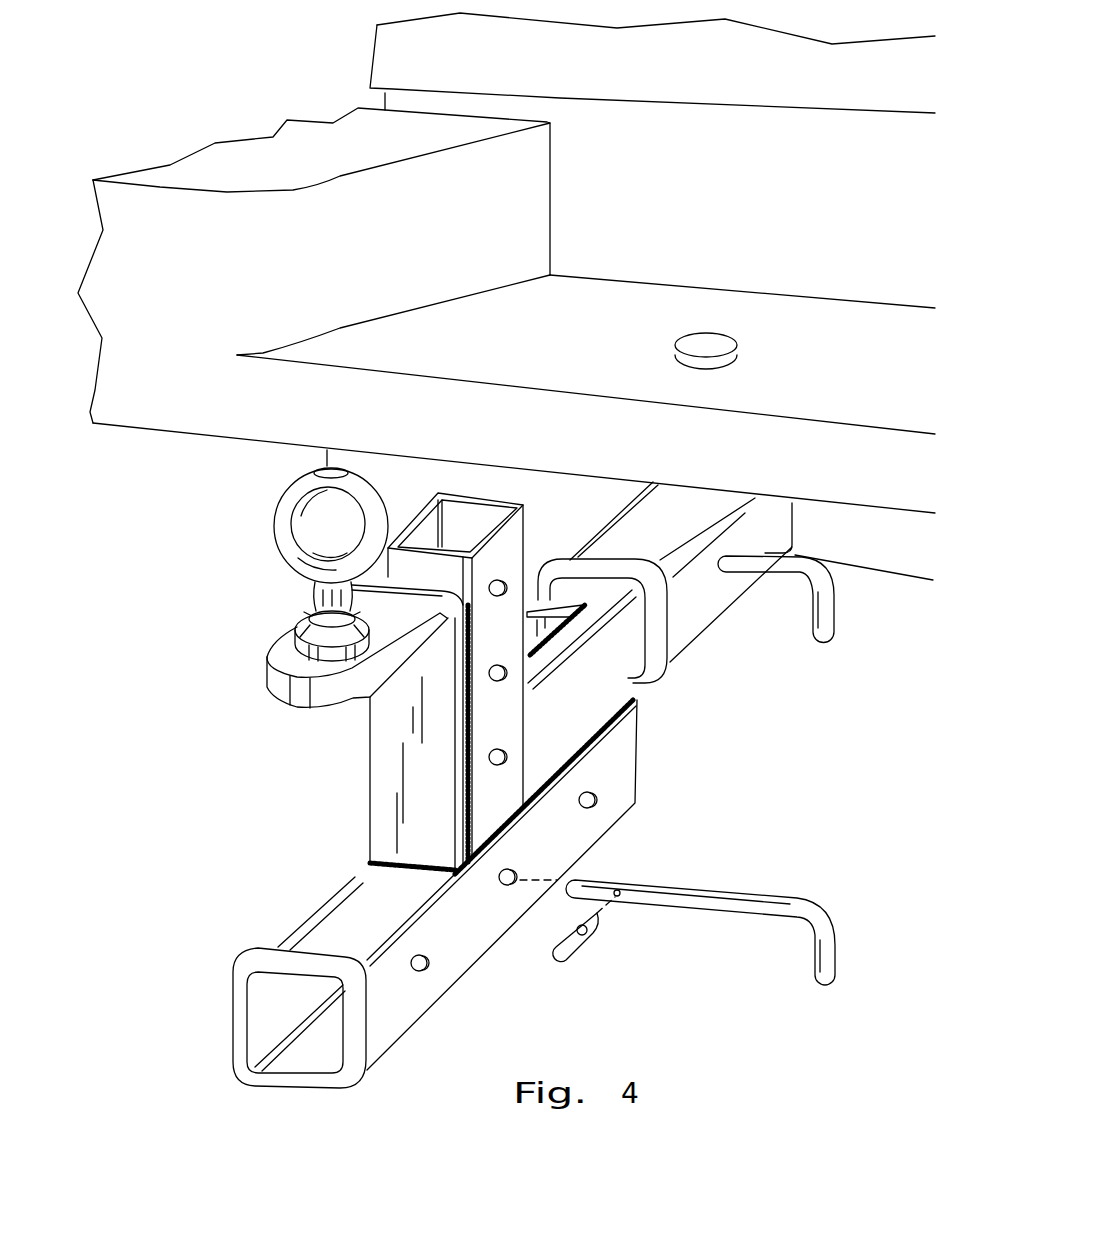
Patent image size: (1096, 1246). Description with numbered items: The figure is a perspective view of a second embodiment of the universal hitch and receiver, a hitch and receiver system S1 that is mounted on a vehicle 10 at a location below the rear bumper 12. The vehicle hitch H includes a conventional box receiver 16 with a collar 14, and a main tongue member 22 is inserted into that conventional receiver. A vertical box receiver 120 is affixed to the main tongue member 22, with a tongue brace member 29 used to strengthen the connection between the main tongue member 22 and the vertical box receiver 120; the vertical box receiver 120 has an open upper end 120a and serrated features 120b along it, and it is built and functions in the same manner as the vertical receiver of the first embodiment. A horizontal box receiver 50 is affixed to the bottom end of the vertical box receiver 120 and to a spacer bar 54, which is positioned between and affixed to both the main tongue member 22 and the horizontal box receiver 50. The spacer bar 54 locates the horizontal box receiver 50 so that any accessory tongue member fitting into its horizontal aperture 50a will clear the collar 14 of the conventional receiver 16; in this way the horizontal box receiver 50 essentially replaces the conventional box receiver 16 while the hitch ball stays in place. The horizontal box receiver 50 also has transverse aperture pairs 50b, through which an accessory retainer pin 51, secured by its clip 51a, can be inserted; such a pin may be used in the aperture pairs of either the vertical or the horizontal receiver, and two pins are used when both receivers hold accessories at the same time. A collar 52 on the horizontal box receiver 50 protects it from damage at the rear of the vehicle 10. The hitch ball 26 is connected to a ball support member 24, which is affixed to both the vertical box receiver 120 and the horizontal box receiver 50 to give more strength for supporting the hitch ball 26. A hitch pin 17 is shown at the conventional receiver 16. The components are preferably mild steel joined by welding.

The vehicle 10 is at (203, 473).
The rear bumper 12 is at (295, 149).
The collar 14 is at (602, 567).
The conventional box receiver 16 is at (707, 612).
The hitch pin 17 is at (825, 603).
The main tongue member 22 is at (640, 675).
The ball support member 24 is at (385, 757).
The hitch ball 26 is at (290, 547).
The tongue brace member 29 is at (553, 608).
The horizontal box receiver 50 is at (420, 1012).
The horizontal aperture 50a is at (308, 1003).
The transverse aperture pairs 50b is at (430, 960).
The accessory retainer pin 51 is at (725, 900).
The hairpin clip 51a is at (590, 933).
The collar 52 is at (252, 963).
The spacer bar 54 is at (598, 747).
The vertical box receiver 120 is at (525, 800).
The tube top opening 120a is at (487, 522).
The tube serrations 120b is at (540, 705).
The vehicle hitch H is at (795, 657).
The hitch and receiver system S1 is at (303, 747).